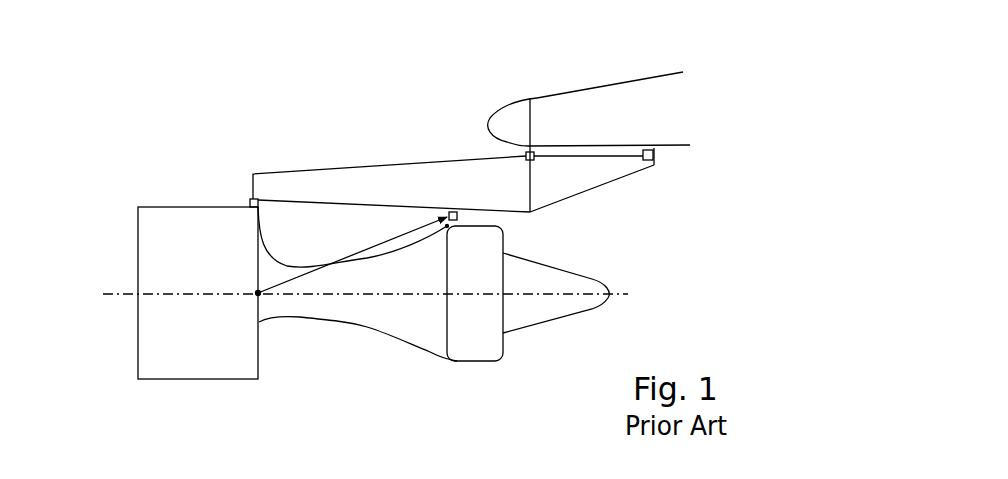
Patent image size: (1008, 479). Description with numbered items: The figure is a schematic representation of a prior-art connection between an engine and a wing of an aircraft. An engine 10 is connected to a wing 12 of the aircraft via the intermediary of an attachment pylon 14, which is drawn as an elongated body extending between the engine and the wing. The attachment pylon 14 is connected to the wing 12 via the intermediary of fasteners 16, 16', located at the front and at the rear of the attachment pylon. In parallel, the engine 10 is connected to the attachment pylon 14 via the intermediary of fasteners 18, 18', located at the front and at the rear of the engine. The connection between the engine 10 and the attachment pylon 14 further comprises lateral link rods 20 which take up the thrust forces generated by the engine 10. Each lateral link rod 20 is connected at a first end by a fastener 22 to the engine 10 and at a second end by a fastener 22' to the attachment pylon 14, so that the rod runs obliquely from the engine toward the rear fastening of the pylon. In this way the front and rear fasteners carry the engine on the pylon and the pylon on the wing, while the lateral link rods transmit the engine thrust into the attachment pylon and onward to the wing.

The engine 10 is at (121, 270).
The wing 12 is at (629, 96).
The attachment pylon 14 is at (355, 185).
The fastener 16 is at (447, 133).
The fastener 16' is at (729, 174).
The fastener 18 is at (205, 166).
The fastener 18' is at (542, 230).
The lateral link rod 20 is at (365, 250).
The fastener 22 is at (277, 367).
The fastener 22' is at (465, 325).